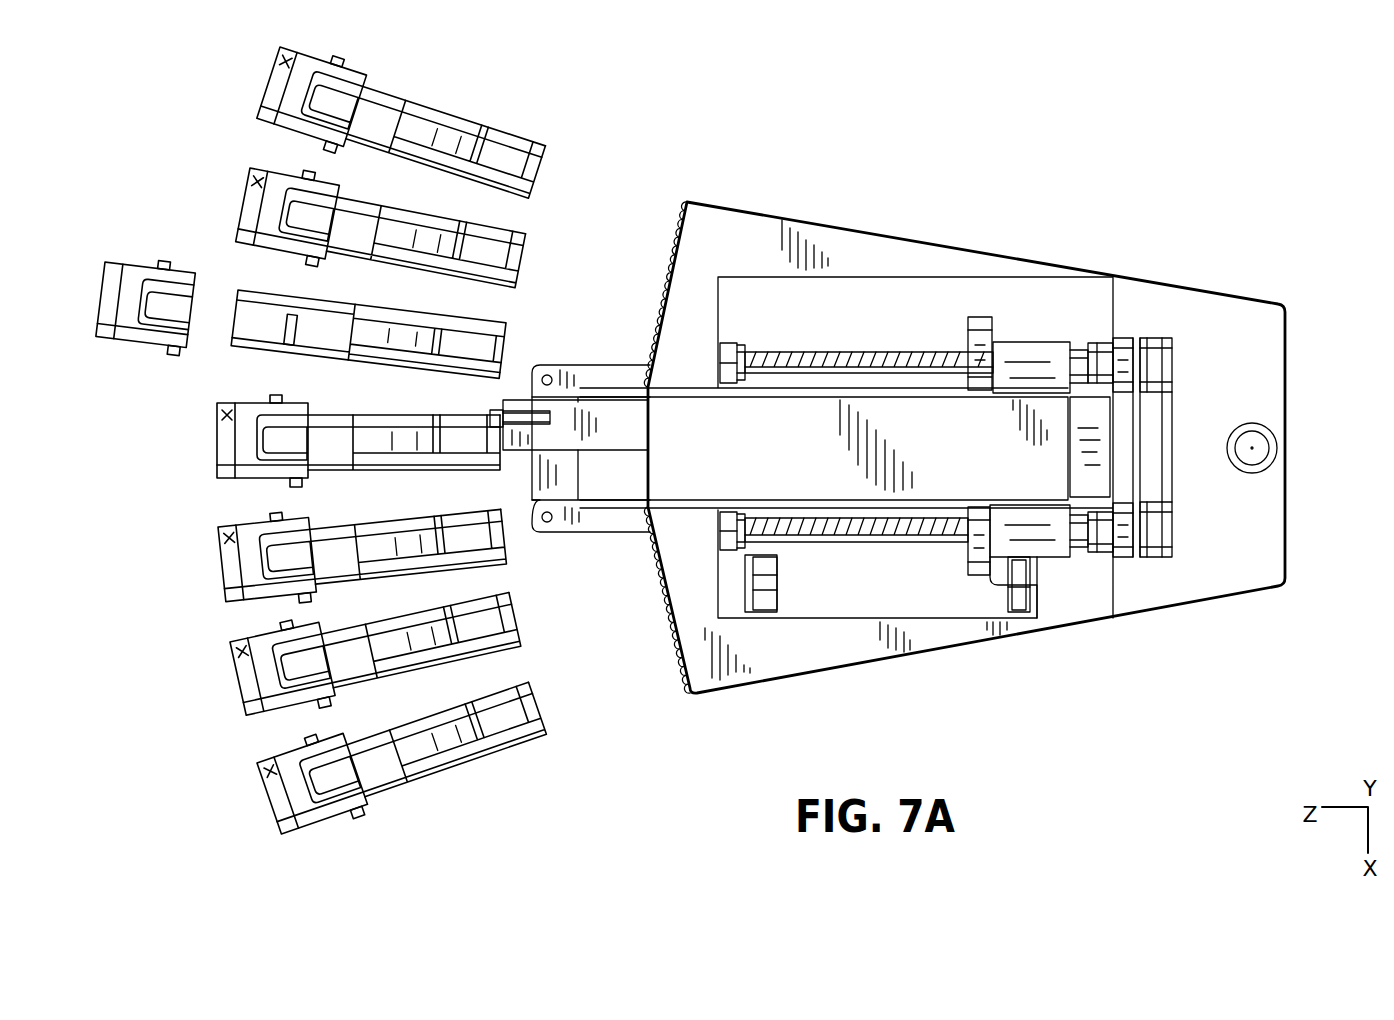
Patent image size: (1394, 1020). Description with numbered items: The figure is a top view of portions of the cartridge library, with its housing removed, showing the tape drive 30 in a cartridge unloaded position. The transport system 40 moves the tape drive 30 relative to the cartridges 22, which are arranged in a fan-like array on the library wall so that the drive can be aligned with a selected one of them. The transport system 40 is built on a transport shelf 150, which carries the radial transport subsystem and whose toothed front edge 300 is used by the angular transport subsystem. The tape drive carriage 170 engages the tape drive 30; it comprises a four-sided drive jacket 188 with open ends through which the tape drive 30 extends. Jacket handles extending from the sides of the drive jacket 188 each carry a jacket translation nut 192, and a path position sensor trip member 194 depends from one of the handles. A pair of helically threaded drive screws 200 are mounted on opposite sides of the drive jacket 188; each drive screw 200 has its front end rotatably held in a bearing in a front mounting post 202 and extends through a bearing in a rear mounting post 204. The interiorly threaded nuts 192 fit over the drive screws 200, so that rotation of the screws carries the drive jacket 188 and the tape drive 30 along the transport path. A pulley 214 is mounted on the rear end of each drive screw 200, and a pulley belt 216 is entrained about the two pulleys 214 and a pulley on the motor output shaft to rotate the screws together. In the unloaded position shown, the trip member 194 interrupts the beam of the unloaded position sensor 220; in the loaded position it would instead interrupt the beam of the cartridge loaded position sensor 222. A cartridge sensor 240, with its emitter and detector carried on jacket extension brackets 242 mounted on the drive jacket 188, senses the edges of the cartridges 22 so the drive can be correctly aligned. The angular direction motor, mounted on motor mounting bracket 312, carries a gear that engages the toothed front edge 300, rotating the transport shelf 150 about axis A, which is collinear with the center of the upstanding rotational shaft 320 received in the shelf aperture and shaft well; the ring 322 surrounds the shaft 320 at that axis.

The cartridges 22 is at (523, 165).
The tape drive 30 is at (1097, 410).
The transport system 40 is at (1243, 613).
The transport shelf 150 is at (717, 663).
The tape drive carriage 170 is at (917, 430).
The drive jacket 188 is at (755, 467).
The jacket translation nut 192 is at (980, 323).
The path position sensor trip member 194 is at (1103, 557).
The drive screw 200 is at (775, 358).
The front mounting post 202 is at (730, 345).
The rear mounting post 204 is at (1103, 347).
The pulley 214 is at (1123, 340).
The pulley belt 216 is at (1155, 420).
The unloaded position sensor 220 is at (1018, 602).
The cartridge loaded position sensor 222 is at (760, 602).
The cartridge sensor 240 is at (492, 412).
The jacket extension brackets 242 is at (583, 430).
The toothed front edge 300 is at (657, 583).
The motor mounting bracket 312 is at (552, 532).
The rotational shaft 320 is at (1247, 443).
The inner ring 322 is at (1257, 470).
The axis of rotation A is at (1260, 447).